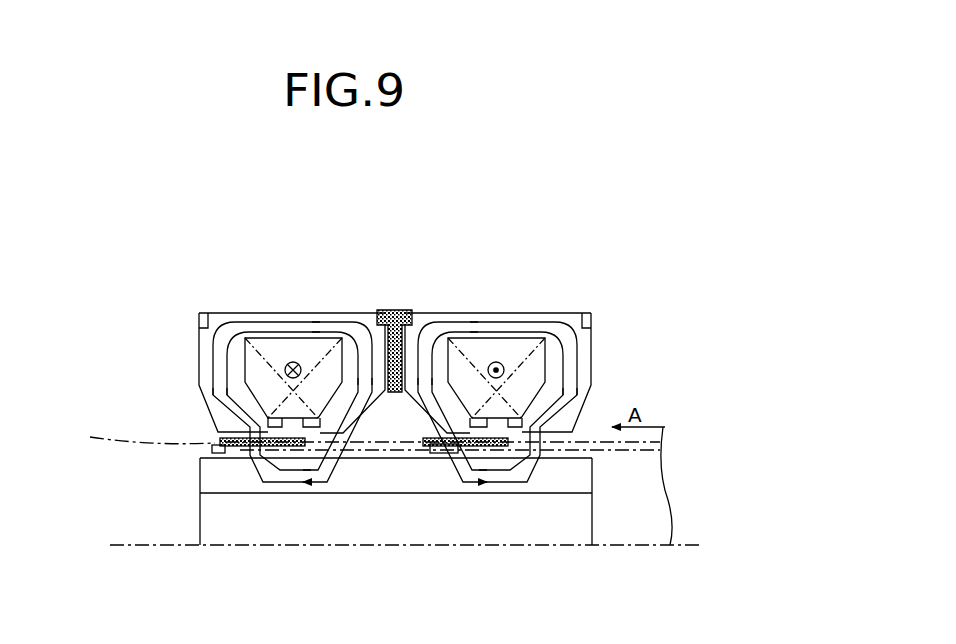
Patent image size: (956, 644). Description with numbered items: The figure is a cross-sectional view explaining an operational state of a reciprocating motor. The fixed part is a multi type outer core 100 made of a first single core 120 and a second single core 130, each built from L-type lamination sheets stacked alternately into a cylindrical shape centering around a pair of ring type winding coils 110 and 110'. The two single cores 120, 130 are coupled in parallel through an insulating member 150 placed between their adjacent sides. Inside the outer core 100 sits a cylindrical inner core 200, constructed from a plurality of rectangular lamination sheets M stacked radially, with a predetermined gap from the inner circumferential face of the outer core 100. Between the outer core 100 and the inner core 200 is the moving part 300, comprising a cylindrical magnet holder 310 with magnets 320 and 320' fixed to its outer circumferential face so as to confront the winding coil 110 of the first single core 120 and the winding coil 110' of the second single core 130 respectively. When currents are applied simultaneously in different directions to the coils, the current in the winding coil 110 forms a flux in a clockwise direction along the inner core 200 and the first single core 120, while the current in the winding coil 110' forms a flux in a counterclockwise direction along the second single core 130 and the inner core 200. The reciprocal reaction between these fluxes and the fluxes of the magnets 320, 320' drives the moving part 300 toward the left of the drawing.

The multi type outer core 100 is at (352, 384).
The winding coil 110 is at (227, 377).
The winding coil 110' is at (512, 338).
The first single core 120 is at (249, 353).
The second single core 130 is at (498, 353).
The insulating member 150 is at (391, 394).
The inner core 200 is at (190, 516).
The moving part 300 is at (218, 437).
The cylindrical magnet holder 310 is at (353, 438).
The magnet 320 is at (282, 507).
The magnet 320' is at (469, 508).
The lamination sheet M is at (222, 470).